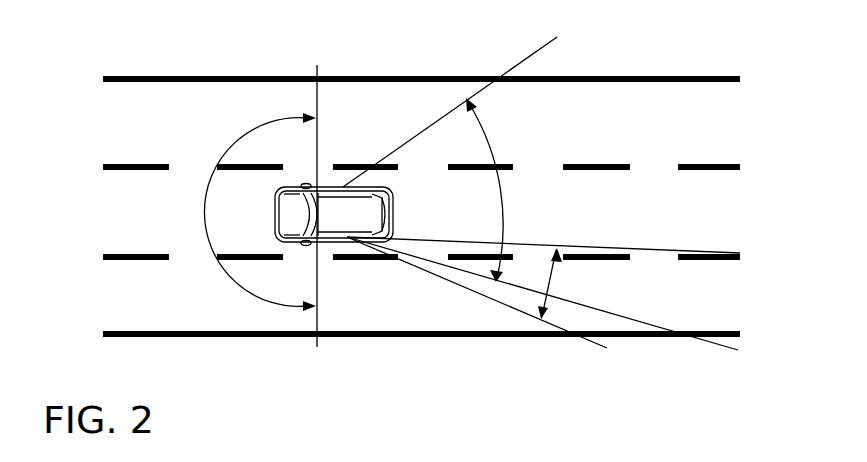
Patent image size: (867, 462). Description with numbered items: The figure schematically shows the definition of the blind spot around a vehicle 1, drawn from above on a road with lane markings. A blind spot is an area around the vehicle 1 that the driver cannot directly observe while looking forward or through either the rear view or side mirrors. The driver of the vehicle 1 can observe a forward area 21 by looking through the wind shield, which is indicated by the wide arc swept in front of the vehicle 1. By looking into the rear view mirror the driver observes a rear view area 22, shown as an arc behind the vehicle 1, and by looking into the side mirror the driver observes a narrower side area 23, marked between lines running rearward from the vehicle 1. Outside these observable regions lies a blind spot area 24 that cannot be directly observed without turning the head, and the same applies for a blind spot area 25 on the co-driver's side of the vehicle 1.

The vehicle 1 is at (370, 213).
The forward area 21 is at (223, 197).
The rear view area 22 is at (504, 207).
The side area 23 is at (553, 279).
The blind spot area 24 is at (397, 302).
The blind spot area at the co-driver's side 25 is at (398, 103).